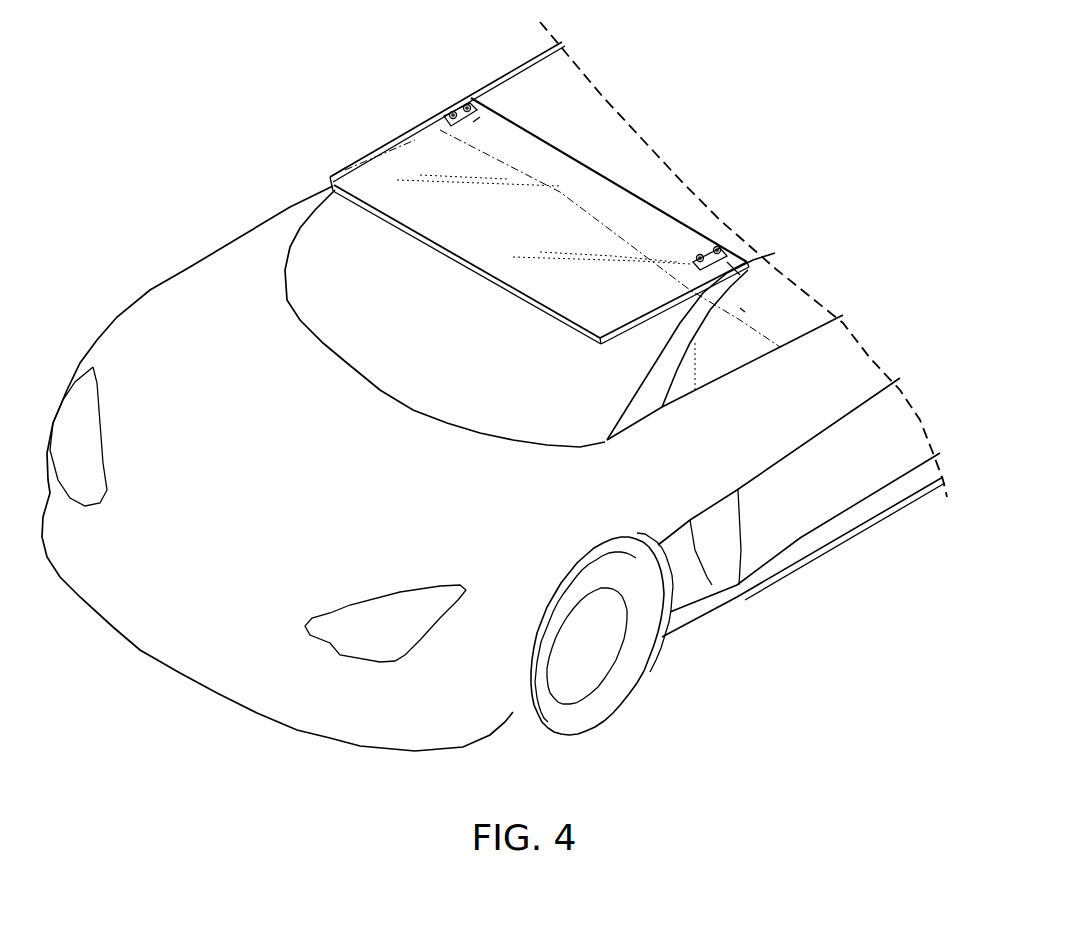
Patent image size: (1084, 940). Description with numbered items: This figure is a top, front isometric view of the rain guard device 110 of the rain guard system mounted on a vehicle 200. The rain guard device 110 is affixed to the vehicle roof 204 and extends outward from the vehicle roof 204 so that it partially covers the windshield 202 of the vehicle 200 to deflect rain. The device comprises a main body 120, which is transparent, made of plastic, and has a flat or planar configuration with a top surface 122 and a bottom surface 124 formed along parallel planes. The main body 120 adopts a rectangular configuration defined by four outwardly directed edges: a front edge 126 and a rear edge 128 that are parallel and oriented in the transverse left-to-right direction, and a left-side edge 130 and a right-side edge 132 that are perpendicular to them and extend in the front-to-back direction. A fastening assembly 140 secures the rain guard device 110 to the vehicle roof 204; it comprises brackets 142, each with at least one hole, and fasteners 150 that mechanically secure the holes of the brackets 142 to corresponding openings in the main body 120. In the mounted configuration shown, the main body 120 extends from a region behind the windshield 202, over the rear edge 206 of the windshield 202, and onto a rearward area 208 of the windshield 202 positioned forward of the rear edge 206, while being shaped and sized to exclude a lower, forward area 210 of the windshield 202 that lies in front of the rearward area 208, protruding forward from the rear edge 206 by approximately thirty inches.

The rain guard device 110 is at (355, 148).
The main body 120 is at (568, 132).
The top surface 122 is at (655, 176).
The bottom surface 124 is at (269, 320).
The front edge 126 is at (295, 269).
The rear edge 128 is at (639, 246).
The left-side edge 130 is at (304, 159).
The right-side edge 132 is at (850, 347).
The fastening assembly 140 is at (440, 92).
The bracket 142 is at (714, 188).
The fastener 150 is at (628, 171).
The vehicle 200 is at (263, 192).
The windshield 202 is at (266, 229).
The vehicle roof 204 is at (743, 259).
The rear edge 206 is at (617, 149).
The rearward area 208 is at (684, 508).
The forward area 210 is at (738, 229).